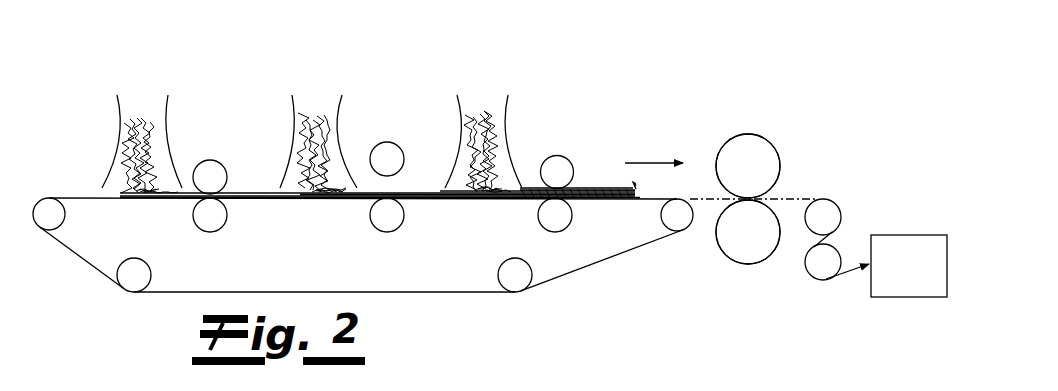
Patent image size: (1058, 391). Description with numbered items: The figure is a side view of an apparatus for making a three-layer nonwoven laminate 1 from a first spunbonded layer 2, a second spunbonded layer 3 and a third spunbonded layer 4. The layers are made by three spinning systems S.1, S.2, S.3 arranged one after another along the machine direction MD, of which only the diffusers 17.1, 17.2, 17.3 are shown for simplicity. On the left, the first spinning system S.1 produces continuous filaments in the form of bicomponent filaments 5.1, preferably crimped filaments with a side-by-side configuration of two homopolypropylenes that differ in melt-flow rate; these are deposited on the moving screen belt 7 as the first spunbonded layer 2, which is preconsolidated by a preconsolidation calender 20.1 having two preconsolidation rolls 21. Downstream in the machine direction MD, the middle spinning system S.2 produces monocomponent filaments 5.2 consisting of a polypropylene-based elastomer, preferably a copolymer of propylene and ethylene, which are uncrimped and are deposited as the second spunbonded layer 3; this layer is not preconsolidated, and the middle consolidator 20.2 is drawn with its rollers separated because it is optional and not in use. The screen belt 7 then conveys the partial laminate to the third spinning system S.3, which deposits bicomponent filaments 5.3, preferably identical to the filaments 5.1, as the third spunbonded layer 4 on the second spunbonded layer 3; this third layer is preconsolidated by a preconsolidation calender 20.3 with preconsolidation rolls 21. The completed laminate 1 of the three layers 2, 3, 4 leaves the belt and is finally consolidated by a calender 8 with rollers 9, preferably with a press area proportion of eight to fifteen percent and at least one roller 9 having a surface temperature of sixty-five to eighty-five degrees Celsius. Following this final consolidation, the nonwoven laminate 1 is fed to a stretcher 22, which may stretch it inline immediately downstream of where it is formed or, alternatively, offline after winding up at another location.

The nonwoven laminate 1 is at (609, 182).
The first spunbonded layer 2 is at (255, 203).
The second spunbonded layer 3 is at (423, 191).
The third spunbonded layer 4 is at (586, 189).
The moving screen belt 7 is at (78, 197).
The calender 8 is at (712, 246).
The calender rollers 9 is at (768, 154).
The diffuser 17.1 is at (113, 133).
The diffuser 17.2 is at (285, 138).
The diffuser 17.3 is at (448, 130).
The bicomponent filaments 5.1 is at (137, 125).
The monocomponent filaments 5.2 is at (307, 118).
The bicomponent filaments 5.3 is at (473, 115).
The first spinning system S.1 is at (179, 70).
The second spinning system S.2 is at (349, 71).
The third spinning system S.3 is at (521, 77).
The preconsolidation calender 20.1 is at (203, 158).
The middle consolidator 20.2 is at (361, 215).
The preconsolidation calender 20.3 is at (565, 147).
The preconsolidation rolls 21 is at (200, 222).
The stretcher 22 is at (902, 232).
The machine direction MD is at (647, 163).